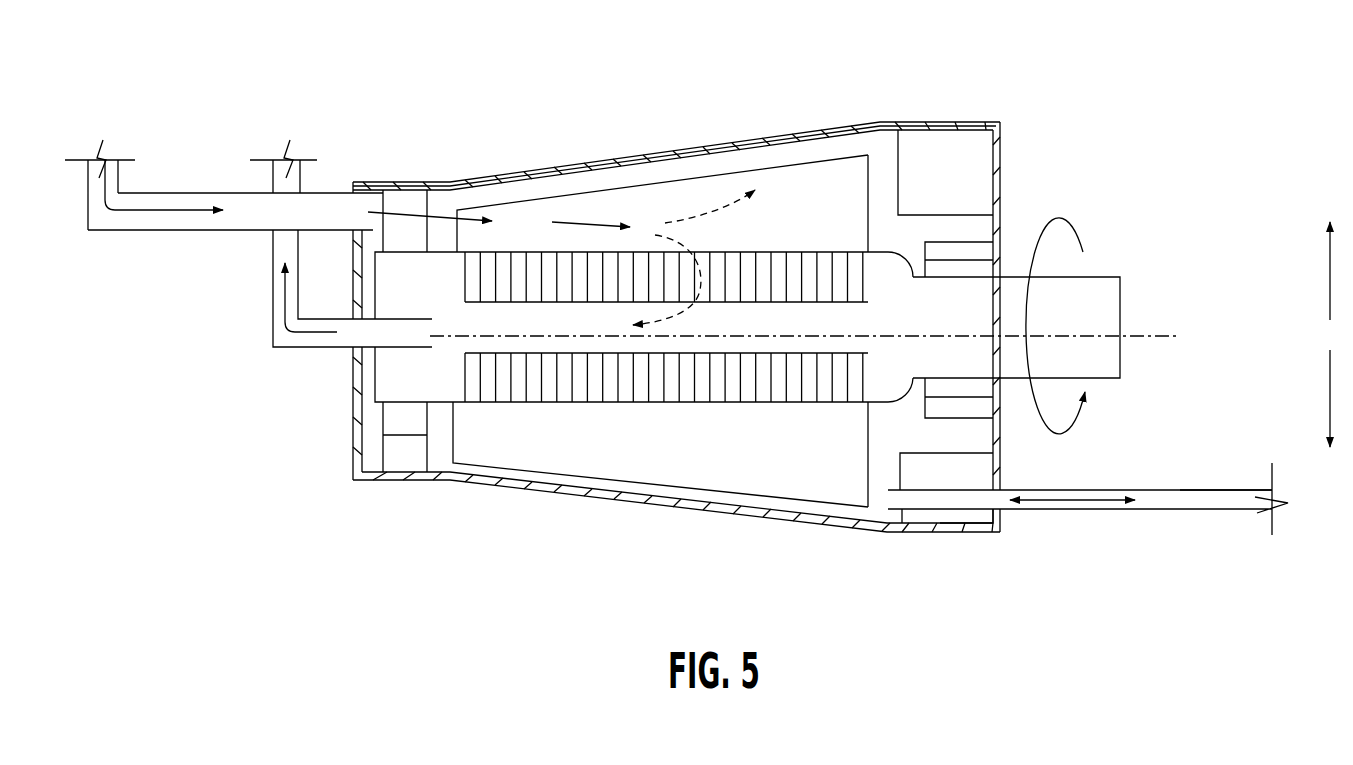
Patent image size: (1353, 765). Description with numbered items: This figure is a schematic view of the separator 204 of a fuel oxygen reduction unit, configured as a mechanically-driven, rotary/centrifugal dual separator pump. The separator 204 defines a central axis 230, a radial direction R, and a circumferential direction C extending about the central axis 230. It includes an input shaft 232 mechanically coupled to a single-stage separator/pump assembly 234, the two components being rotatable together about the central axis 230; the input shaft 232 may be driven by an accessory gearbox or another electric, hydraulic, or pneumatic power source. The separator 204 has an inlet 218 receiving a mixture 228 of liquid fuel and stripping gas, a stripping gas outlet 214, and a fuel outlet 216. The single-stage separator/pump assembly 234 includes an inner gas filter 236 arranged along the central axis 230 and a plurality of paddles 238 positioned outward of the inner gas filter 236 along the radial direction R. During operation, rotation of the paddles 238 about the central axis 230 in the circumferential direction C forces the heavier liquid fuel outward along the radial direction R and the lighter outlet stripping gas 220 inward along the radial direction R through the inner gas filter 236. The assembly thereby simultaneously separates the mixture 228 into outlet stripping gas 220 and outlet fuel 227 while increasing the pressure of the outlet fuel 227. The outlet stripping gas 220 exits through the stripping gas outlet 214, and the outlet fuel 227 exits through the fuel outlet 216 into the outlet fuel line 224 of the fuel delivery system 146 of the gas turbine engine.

The fuel delivery system 146 is at (1232, 572).
The separator 204 is at (625, 549).
The stripping gas outlet 214 is at (351, 346).
The fuel outlet 216 is at (1018, 511).
The inlet 218 is at (350, 209).
The outlet stripping gas 220 is at (282, 312).
The outlet fuel line 224 is at (1202, 490).
The outlet fuel 227 is at (1075, 501).
The mixture 228 is at (133, 213).
The central axis 230 is at (1087, 333).
The input shaft 232 is at (1005, 287).
The single-stage separator/pump assembly 234 is at (771, 145).
The inner gas filter 236 is at (573, 403).
The paddles 238 is at (688, 197).
The circumferential direction C is at (1063, 228).
The radial direction R is at (1330, 334).